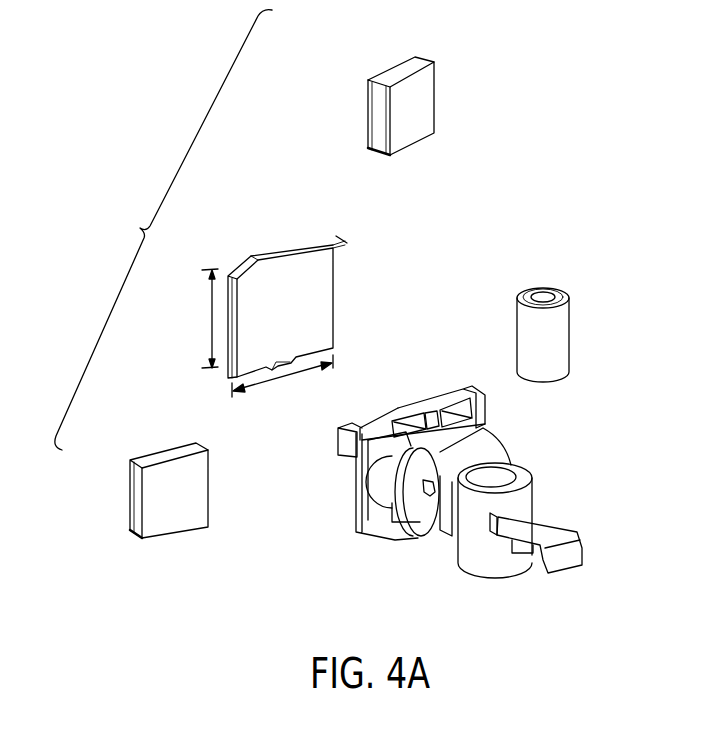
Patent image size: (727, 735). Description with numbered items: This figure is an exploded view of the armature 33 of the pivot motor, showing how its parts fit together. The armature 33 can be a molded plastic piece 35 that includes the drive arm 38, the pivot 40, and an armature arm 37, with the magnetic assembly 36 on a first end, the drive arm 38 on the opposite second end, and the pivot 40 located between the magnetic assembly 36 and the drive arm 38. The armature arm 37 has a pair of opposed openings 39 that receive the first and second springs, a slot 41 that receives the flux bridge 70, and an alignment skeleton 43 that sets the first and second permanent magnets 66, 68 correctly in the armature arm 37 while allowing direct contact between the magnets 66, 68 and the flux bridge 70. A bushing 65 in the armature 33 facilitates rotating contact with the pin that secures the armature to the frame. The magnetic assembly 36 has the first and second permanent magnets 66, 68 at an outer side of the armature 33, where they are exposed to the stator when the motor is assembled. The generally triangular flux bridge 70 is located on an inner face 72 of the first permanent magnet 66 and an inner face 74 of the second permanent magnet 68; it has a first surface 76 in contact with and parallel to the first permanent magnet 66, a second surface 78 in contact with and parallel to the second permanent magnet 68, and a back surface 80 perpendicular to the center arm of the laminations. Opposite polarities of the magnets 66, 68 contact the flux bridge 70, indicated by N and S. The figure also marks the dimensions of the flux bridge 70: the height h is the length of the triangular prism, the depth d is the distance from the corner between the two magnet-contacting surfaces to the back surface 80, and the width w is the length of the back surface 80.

The armature 33 is at (453, 478).
The molded plastic piece 35 is at (481, 403).
The magnetic assembly 36 is at (163, 230).
The armature arm 37 is at (438, 372).
The drive arm 38 is at (538, 517).
The opposed openings 39 is at (405, 505).
The pivot 40 is at (472, 570).
The slot 41 is at (402, 407).
The alignment skeleton 43 is at (342, 430).
The bushing 65 is at (560, 290).
The first permanent magnet 66 is at (368, 136).
The second permanent magnet 68 is at (212, 490).
The flux bridge 70 is at (360, 308).
The inner face of first permanent magnet 72 is at (402, 130).
The inner face of second permanent magnet 74 is at (204, 513).
The first surface 76 is at (292, 248).
The second surface 78 is at (253, 261).
The back surface 80 is at (250, 355).
The north polarity indication N is at (410, 82).
The south polarity indication S is at (180, 478).
The height h is at (210, 322).
The width w is at (283, 380).
The depth d is at (345, 238).